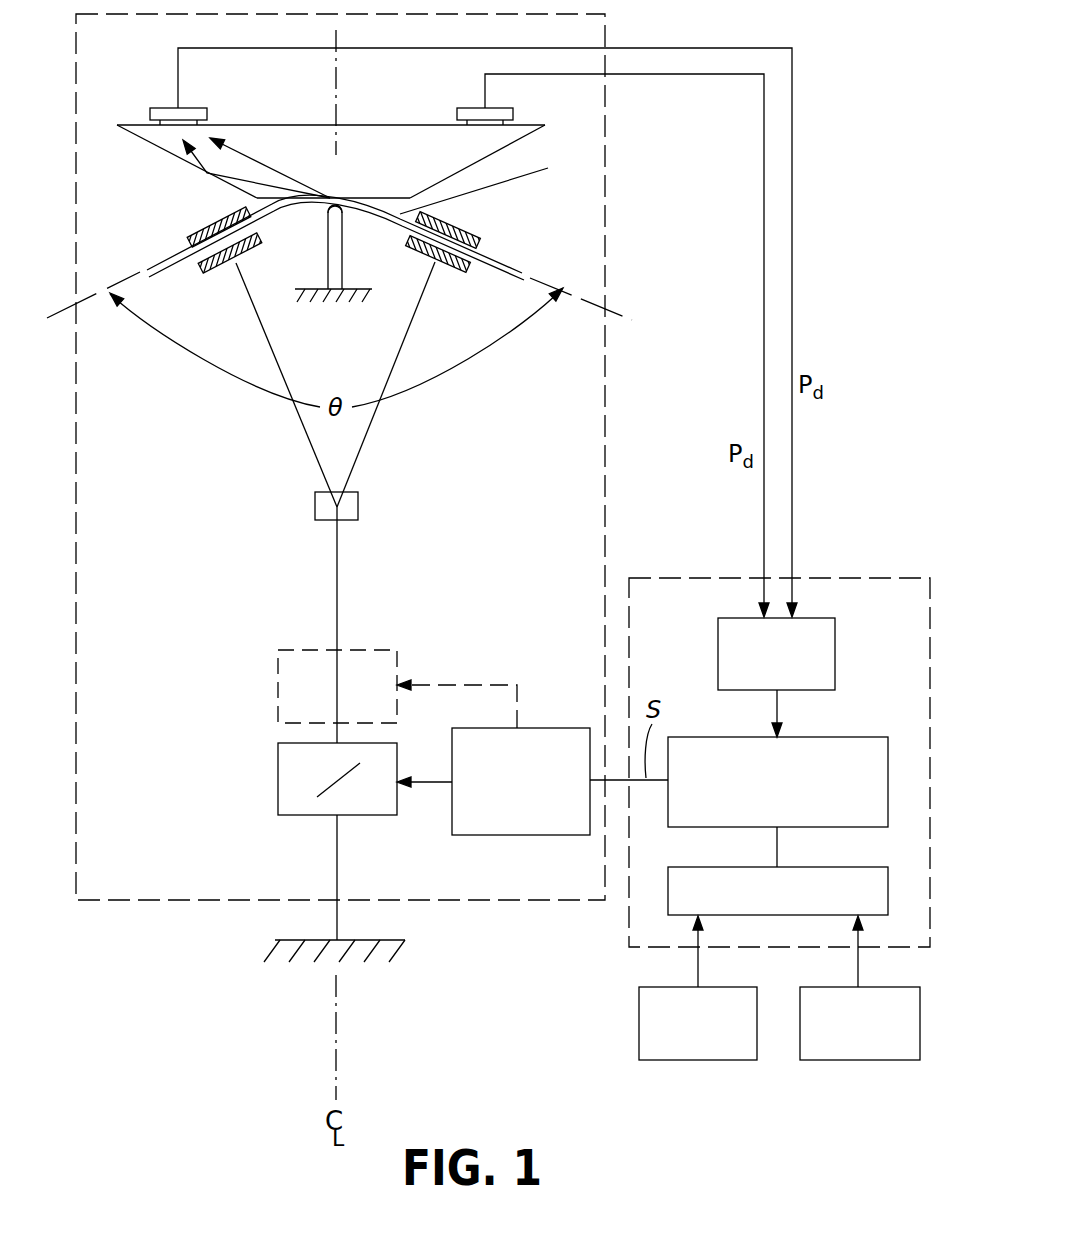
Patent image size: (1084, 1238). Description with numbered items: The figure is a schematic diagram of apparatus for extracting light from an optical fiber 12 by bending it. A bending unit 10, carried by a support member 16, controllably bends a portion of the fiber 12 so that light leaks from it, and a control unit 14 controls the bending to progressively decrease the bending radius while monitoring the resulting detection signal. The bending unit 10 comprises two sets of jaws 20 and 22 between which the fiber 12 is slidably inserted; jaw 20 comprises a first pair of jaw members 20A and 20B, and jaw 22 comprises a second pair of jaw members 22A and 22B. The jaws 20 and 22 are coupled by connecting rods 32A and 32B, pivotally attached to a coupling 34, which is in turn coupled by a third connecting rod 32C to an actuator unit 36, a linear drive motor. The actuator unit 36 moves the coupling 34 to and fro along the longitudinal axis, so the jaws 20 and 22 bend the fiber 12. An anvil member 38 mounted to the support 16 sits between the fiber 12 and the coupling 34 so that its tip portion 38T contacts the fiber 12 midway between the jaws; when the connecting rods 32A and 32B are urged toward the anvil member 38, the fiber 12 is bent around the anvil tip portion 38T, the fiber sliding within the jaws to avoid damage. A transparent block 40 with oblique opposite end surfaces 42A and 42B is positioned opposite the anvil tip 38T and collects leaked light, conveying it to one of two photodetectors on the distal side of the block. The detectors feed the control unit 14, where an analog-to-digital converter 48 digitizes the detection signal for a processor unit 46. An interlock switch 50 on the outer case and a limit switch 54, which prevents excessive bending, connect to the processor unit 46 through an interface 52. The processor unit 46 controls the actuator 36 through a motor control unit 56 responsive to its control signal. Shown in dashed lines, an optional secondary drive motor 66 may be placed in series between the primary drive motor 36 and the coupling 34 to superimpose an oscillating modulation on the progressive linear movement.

The bending unit 10 is at (605, 223).
The optical fiber 12 is at (339, 238).
The control unit 14 is at (850, 578).
The support member 16 is at (363, 290).
The first set of jaws 20 is at (181, 266).
The first jaw member 20A is at (220, 219).
The first jaw member 20B is at (218, 264).
The second set of jaws 22 is at (489, 266).
The second jaw member 22A is at (455, 221).
The second jaw member 22B is at (445, 265).
The connecting rod 32A is at (305, 418).
The connecting rod 32B is at (370, 420).
The third connecting rod 32C is at (340, 580).
The coupling 34 is at (358, 506).
The actuator unit 36 is at (279, 784).
The anvil member 38 is at (328, 280).
The tip portion 38T is at (340, 214).
The transparent block 40 is at (395, 169).
The oblique end surface 42A is at (167, 152).
The oblique end surface 42B is at (512, 143).
The processor unit 46 is at (848, 737).
The analog-to-digital converter 48 is at (835, 653).
The interlock switch 50 is at (873, 1060).
The interface 52 is at (855, 867).
The limit switch 54 is at (712, 1060).
The motor control unit 56 is at (560, 728).
The secondary drive motor 66 is at (279, 688).